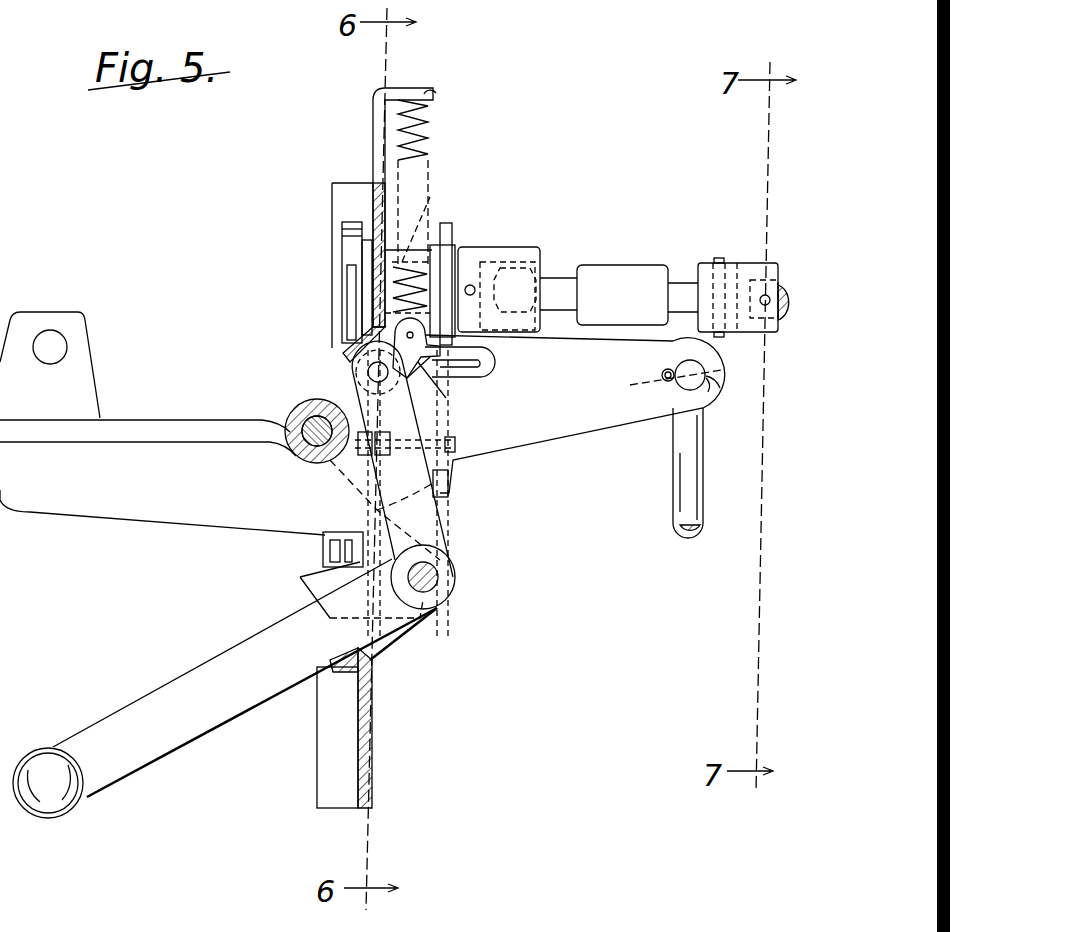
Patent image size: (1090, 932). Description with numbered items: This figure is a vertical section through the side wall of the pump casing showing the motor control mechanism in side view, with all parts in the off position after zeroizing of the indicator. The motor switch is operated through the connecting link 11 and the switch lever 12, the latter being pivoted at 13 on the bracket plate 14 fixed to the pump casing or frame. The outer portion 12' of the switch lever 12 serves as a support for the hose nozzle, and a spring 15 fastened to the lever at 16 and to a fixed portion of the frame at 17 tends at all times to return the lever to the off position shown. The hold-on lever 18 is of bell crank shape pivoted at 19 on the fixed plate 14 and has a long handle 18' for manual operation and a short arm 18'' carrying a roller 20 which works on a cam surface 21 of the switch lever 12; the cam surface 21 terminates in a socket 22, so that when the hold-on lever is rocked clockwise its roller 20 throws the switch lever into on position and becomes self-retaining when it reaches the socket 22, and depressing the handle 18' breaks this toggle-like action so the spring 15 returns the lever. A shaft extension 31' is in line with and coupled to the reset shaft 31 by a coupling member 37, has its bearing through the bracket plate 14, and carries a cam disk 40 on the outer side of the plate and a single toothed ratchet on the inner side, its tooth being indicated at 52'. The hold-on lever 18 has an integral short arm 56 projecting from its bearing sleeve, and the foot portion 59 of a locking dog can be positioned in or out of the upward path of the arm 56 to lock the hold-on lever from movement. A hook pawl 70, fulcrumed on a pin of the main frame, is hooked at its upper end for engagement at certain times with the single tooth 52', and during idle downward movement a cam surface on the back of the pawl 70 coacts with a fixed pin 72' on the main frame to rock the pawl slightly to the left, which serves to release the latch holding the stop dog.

The connecting link 11 is at (680, 495).
The switch lever 12 is at (603, 414).
The outer portion of the switch lever 12' is at (162, 428).
The pivot 13 is at (312, 420).
The bracket plate 14 is at (373, 200).
The spring 15 is at (430, 138).
The spring fastening point (ledge) 16 is at (440, 363).
The spring fastening point 17 is at (427, 94).
The hold-on lever 18 is at (262, 702).
The handle 18' is at (202, 688).
The short arm 18'' is at (421, 459).
The pivot 19 is at (440, 583).
The roller 20 is at (366, 369).
The cam surface 21 is at (438, 397).
The socket 22 is at (482, 348).
The reset shaft 31 is at (745, 285).
The shaft extension 31' is at (413, 229).
The coupling member 37 is at (683, 290).
The cam disk 40 is at (348, 232).
The single tooth 52' is at (485, 278).
The short arm 56 is at (310, 584).
The foot portion 59 is at (320, 557).
The hook pawl 70 is at (448, 482).
The fixed pin 72' is at (428, 495).